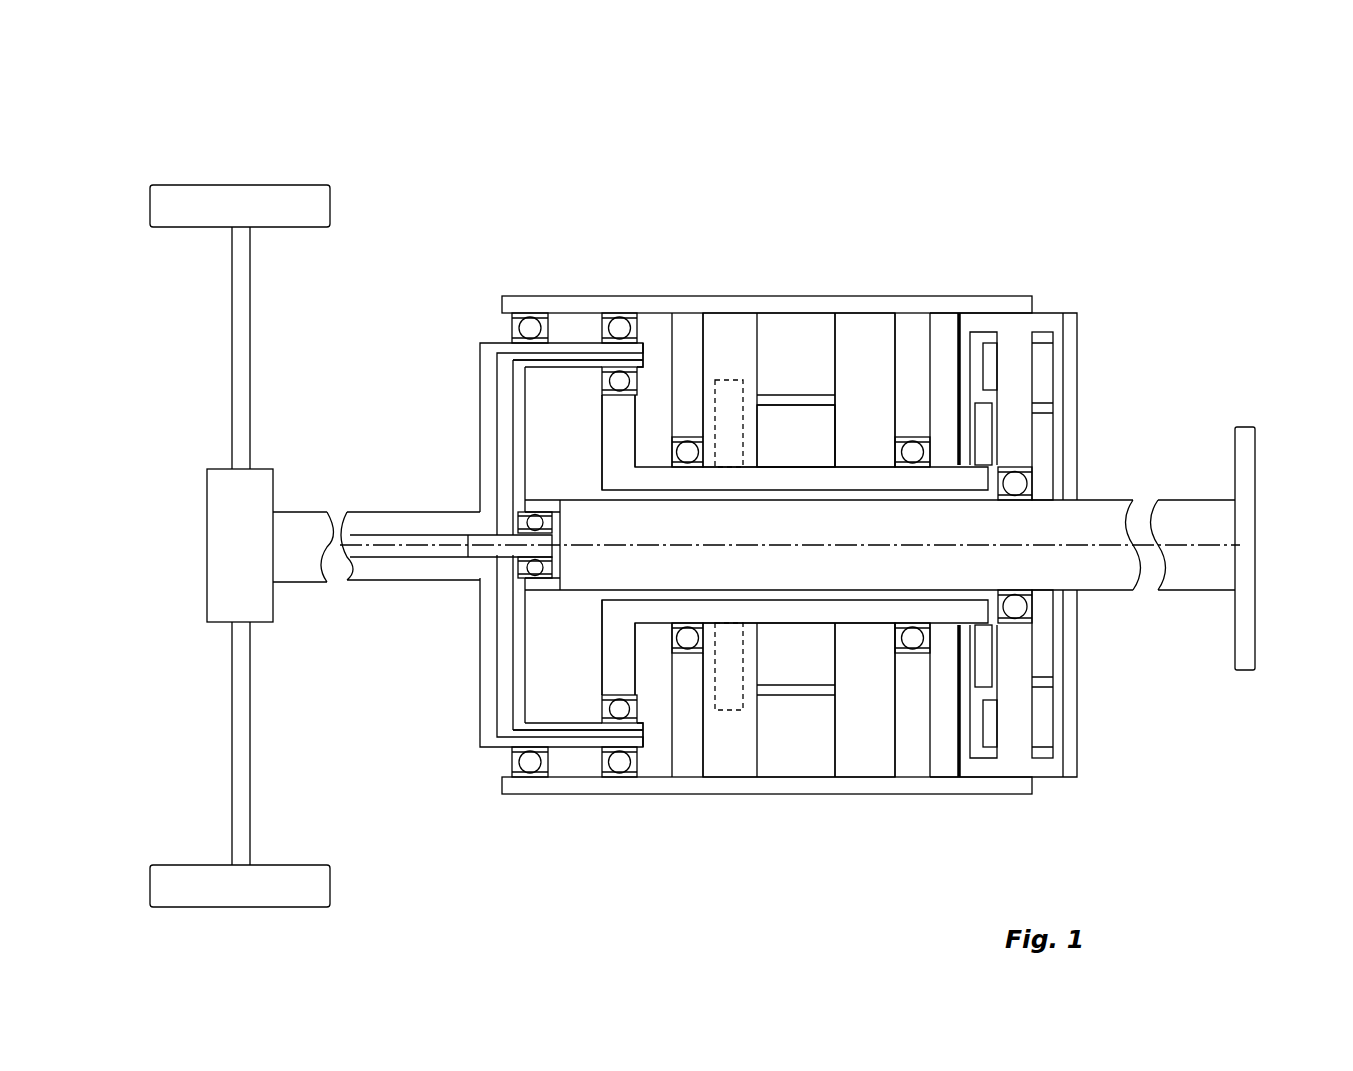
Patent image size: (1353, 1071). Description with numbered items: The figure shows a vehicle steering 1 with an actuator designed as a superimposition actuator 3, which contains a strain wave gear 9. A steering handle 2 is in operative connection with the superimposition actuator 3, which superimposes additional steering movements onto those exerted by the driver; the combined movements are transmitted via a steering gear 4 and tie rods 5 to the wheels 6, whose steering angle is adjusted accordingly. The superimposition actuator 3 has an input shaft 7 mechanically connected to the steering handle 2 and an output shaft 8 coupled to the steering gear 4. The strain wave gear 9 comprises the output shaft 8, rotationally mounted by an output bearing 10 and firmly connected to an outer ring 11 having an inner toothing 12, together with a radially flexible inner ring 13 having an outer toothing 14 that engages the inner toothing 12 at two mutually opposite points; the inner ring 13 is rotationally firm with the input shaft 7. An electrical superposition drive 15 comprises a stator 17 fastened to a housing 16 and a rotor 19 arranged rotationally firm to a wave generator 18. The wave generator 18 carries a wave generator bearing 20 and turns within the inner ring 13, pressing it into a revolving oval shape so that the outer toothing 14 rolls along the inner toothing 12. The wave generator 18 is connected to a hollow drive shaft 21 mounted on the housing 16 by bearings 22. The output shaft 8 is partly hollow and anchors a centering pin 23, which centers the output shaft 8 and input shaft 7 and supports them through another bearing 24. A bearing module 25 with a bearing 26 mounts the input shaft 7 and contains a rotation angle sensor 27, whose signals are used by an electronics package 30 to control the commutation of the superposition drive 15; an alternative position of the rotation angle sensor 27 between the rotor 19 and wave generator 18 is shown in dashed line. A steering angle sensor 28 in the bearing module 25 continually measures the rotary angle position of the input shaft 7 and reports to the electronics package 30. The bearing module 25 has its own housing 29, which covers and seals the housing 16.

The vehicle steering 1 is at (1182, 128).
The steering handle 2 is at (1247, 460).
The superimposition actuator 3 is at (877, 183).
The steering gear 4 is at (218, 490).
The tie rods 5 is at (238, 342).
The wheels 6 is at (190, 200).
The input shaft 7 is at (1112, 572).
The output shaft 8 is at (425, 520).
The strain wave gear 9 is at (574, 275).
The output bearing 10 is at (598, 325).
The outer ring 11 is at (640, 355).
The inner toothing 12 is at (650, 360).
The inner ring 13 is at (588, 370).
The outer toothing 14 is at (578, 545).
The electrical superposition drive 15 is at (850, 742).
The housing 16 is at (850, 300).
The stator 17 is at (822, 357).
The wave generator 18 is at (607, 428).
The rotor 19 is at (828, 438).
The wave generator bearing 20 is at (602, 712).
The drive shaft 21 is at (738, 482).
The bearing 22 is at (683, 457).
The centering pin 23 is at (482, 562).
The bearing 24 is at (540, 522).
The bearing module 25 is at (1102, 377).
The bearing 26 is at (1018, 488).
The rotation angle sensor 27 is at (735, 385).
The steering angle sensor 28 is at (1043, 462).
The housing 29 is at (963, 385).
The electronics package 30 is at (992, 365).